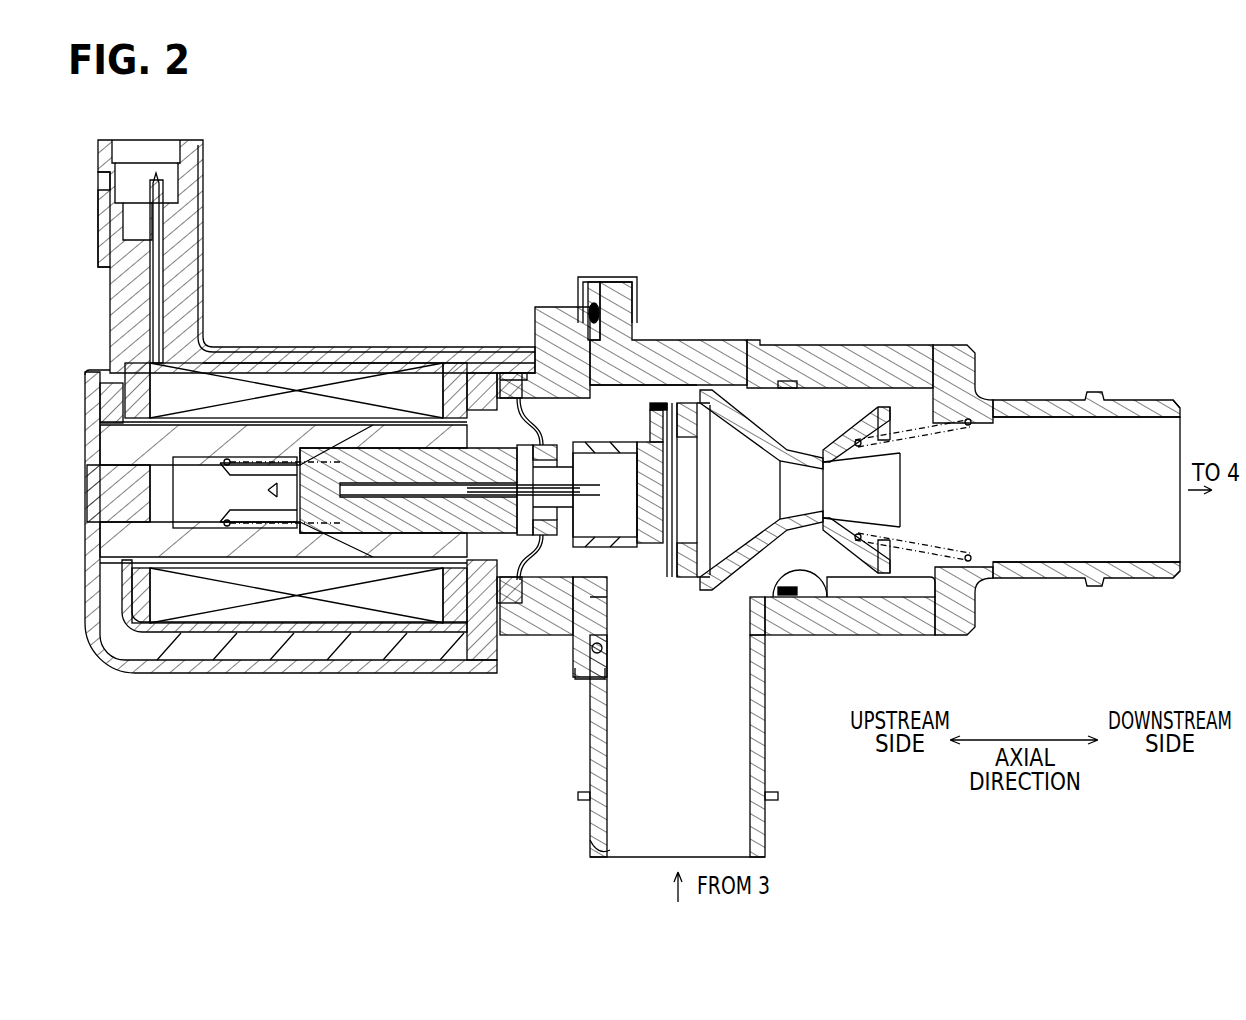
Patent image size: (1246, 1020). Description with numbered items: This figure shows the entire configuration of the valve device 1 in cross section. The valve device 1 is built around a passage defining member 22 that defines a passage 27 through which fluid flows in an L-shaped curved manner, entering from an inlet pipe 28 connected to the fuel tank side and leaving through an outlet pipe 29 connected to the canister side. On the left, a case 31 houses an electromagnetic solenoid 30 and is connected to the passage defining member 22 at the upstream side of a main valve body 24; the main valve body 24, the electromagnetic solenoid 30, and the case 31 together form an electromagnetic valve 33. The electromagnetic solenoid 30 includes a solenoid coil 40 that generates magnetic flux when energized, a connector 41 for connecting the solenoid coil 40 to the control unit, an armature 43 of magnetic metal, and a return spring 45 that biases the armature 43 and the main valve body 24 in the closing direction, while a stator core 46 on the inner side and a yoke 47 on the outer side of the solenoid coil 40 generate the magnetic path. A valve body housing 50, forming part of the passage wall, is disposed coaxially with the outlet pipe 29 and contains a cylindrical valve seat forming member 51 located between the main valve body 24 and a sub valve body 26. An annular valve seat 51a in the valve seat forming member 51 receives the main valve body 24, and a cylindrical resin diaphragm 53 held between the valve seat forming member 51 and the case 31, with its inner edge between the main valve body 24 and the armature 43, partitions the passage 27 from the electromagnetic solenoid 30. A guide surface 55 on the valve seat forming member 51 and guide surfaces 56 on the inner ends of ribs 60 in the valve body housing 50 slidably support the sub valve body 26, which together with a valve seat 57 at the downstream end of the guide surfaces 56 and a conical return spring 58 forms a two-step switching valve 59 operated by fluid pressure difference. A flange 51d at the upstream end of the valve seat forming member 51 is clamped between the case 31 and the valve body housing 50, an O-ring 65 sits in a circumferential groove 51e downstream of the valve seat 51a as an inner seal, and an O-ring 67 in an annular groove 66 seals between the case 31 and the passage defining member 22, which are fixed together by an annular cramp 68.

The valve device 1 is at (1080, 134).
The passage defining member 22 is at (955, 370).
The main valve body 24 is at (656, 404).
The sub valve body 26 is at (752, 430).
The passage 27 is at (608, 845).
The inlet pipe 28 is at (598, 772).
The outlet pipe 29 is at (1118, 400).
The electromagnetic solenoid 30 is at (340, 312).
The case 31 is at (500, 362).
The electromagnetic valve 33 is at (350, 226).
The solenoid coil 40 is at (288, 385).
The connector 41 is at (156, 176).
The armature 43 is at (430, 522).
The return spring 45 is at (272, 522).
The stator core 46 is at (388, 525).
The yoke 47 is at (130, 655).
The valve body housing 50 is at (832, 372).
The valve seat forming member 51 is at (765, 632).
The valve seat 51a is at (674, 420).
The flange 51d is at (528, 355).
The circumferential groove 51e is at (793, 381).
The diaphragm 53 is at (524, 600).
The guide surface 55 is at (822, 597).
The guide surfaces 56 is at (930, 638).
The valve seat 57 is at (950, 396).
The return spring 58 is at (980, 612).
The two-step switching valve 59 is at (834, 222).
The ribs 60 is at (903, 392).
The O-ring 65 is at (788, 597).
The annular groove 66 is at (589, 312).
The O-ring 67 is at (593, 655).
The annular cramp 68 is at (611, 282).